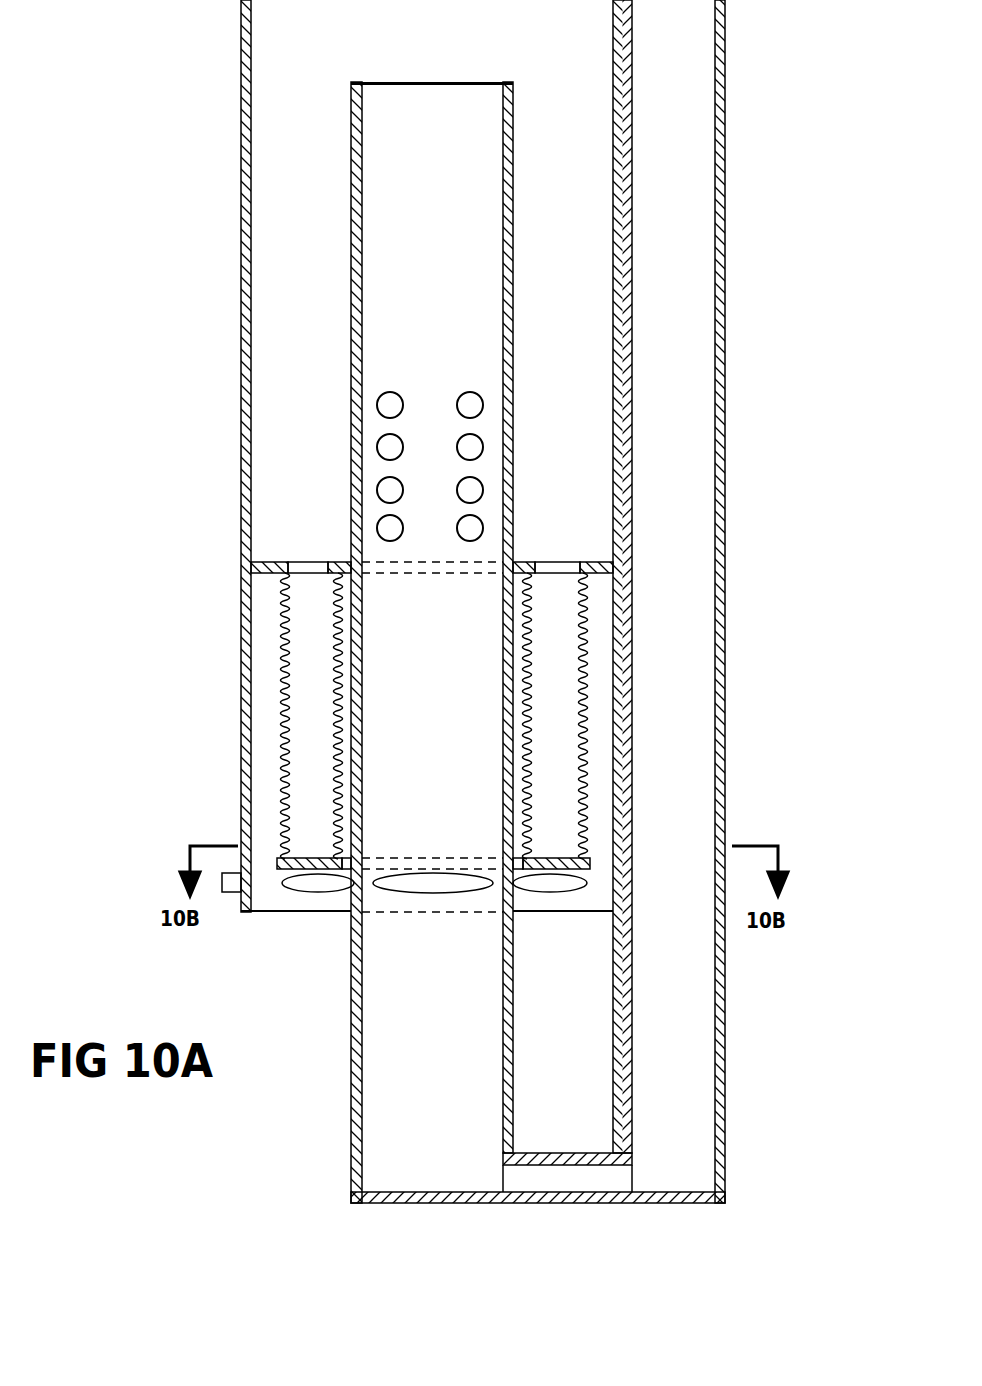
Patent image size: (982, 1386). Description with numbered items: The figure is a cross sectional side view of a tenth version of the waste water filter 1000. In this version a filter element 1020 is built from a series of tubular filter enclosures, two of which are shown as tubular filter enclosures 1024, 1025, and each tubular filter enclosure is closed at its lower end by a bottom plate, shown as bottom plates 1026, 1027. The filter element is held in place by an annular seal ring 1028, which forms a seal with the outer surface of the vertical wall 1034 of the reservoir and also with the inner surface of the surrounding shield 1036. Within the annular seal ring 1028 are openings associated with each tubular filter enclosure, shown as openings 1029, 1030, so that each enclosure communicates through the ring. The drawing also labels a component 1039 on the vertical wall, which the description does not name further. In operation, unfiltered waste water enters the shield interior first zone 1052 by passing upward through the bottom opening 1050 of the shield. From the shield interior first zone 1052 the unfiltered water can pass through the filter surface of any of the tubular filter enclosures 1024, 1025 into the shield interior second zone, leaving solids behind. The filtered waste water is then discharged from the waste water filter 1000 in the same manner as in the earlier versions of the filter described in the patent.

The waste water filter 1000 is at (214, 316).
The filter element 1020 is at (239, 716).
The tubular filter enclosure 1024 is at (584, 592).
The tubular filter enclosure 1025 is at (283, 738).
The bottom plate 1026 is at (535, 865).
The bottom plate 1027 is at (295, 877).
The annular seal ring 1028 is at (290, 583).
The opening 1029 is at (305, 571).
The opening 1030 is at (556, 571).
The vertical wall of the reservoir 1034 is at (353, 1088).
The outer housing 1036 is at (725, 1078).
The holes 1039 is at (383, 408).
The bottom opening of the shield 1050 is at (530, 905).
The shield interior first zone 1052 is at (597, 743).